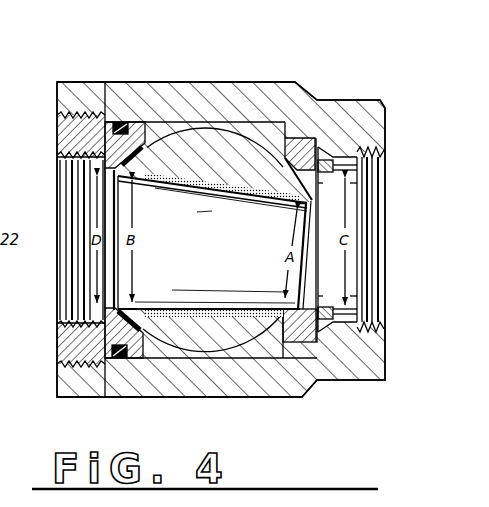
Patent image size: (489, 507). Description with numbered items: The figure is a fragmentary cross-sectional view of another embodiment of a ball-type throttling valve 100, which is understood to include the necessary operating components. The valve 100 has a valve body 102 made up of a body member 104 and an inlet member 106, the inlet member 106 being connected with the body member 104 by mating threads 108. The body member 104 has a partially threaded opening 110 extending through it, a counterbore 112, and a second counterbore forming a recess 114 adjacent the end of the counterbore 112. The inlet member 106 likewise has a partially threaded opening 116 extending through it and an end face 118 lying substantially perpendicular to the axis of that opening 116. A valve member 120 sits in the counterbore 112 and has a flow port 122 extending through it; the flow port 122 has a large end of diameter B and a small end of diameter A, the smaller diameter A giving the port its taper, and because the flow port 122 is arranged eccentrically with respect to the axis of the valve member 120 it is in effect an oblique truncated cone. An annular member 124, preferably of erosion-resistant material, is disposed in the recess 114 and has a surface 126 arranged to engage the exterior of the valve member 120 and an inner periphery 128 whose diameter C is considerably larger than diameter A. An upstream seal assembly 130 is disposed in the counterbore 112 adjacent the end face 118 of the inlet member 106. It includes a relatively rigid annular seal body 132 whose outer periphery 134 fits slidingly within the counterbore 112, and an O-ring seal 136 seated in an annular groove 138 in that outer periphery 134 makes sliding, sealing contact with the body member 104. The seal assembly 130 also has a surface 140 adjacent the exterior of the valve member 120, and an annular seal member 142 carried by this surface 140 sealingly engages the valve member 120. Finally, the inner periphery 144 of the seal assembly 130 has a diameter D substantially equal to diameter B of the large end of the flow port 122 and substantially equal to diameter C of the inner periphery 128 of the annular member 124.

The throttling valve 100 is at (216, 55).
The valve body 102 is at (128, 82).
The body member 104 is at (116, 81).
The inlet member 106 is at (68, 136).
The mating threads 108 is at (72, 112).
The partially threaded opening 110 is at (382, 239).
The counterbore 112 is at (272, 360).
The recess 114 is at (303, 347).
The opening 116 is at (67, 259).
The end face 118 is at (107, 338).
The valve member 120 is at (178, 178).
The flow port 122 is at (242, 267).
The annular member 124 is at (305, 140).
The surface 126 is at (292, 171).
The inner periphery 128 is at (297, 210).
The upstream seal assembly 130 is at (148, 151).
The annular seal body 132 is at (168, 337).
The outer periphery 134 is at (133, 363).
The O-ring seal 136 is at (117, 362).
The annular groove 138 is at (143, 343).
The surface 140 is at (141, 318).
The annular seal member 142 is at (136, 307).
The inner periphery 144 is at (117, 306).